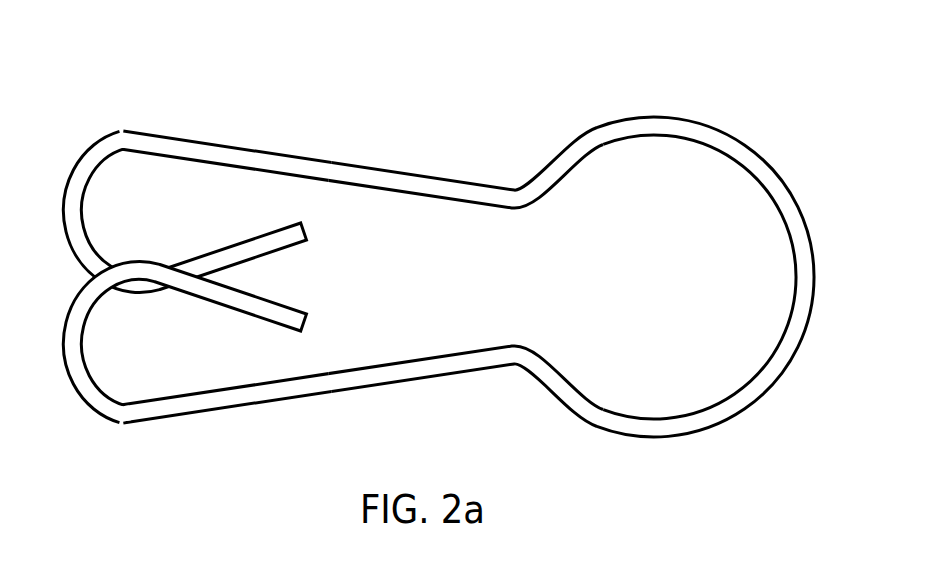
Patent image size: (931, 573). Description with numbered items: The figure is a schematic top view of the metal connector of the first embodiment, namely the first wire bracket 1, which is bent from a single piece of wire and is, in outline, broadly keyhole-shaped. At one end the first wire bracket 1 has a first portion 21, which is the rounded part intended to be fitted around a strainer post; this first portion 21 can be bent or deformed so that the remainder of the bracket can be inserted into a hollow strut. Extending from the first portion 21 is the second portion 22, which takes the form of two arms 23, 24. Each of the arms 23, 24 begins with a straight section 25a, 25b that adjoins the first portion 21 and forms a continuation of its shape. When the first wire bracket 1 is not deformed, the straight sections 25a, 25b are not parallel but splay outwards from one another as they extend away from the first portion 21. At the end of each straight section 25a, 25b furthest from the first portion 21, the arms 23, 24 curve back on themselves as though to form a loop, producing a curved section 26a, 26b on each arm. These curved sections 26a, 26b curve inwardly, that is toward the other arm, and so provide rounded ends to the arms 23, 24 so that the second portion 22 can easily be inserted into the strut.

The first wire bracket 1 is at (430, 239).
The first portion 21 is at (772, 158).
The second portion 22 is at (361, 242).
The arm 23 is at (449, 156).
The arm 24 is at (309, 420).
The straight section 25a is at (229, 143).
The straight section 25b is at (405, 382).
The curved section 26a is at (66, 152).
The curved section 26b is at (310, 309).